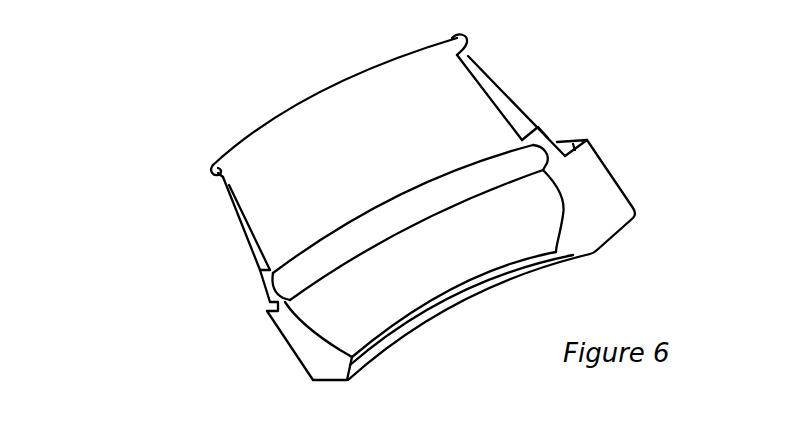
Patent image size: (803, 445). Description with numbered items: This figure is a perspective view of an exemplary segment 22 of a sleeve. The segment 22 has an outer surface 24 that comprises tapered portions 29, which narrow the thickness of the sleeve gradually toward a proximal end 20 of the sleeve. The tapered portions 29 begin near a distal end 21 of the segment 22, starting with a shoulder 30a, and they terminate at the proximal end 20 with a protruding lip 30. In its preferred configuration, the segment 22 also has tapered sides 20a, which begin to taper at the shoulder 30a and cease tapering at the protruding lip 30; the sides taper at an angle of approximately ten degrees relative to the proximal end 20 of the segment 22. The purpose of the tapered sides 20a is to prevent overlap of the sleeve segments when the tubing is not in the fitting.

The proximal end 20 is at (447, 15).
The protruding lip 30 is at (458, 41).
The tapered sides 20a is at (487, 83).
The outer surface 24 is at (562, 129).
The shoulder 30a is at (576, 139).
The tapered portions 29 is at (234, 206).
The distal end 21 is at (570, 285).
The segment 22 is at (177, 298).